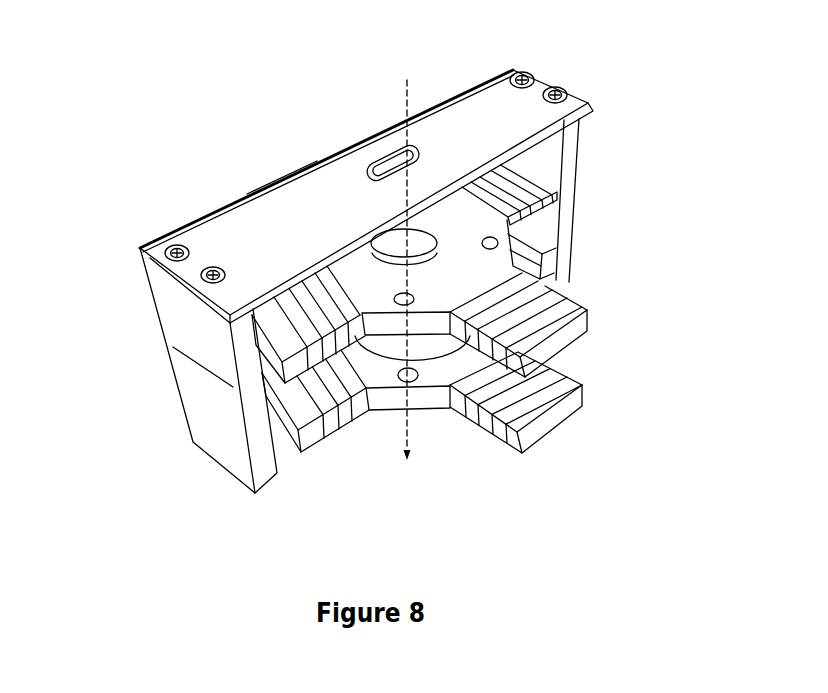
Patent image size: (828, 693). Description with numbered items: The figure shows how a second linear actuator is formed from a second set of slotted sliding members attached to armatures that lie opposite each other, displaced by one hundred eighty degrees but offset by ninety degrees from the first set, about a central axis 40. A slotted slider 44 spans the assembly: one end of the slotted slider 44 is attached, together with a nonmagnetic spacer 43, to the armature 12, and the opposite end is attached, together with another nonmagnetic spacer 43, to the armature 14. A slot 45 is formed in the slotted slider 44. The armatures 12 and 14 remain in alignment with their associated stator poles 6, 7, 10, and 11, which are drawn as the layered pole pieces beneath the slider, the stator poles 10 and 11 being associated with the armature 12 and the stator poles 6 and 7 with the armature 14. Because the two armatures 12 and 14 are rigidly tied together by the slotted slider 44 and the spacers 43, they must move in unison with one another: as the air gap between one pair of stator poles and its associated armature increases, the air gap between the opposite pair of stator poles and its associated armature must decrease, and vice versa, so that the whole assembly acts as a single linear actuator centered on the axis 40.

The axis of rotation 40 is at (416, 67).
The slot 45 is at (385, 160).
The slotted slider 44 is at (279, 217).
The nonmagnetic spacer 43 is at (186, 316).
The stator pole 6 is at (560, 195).
The armature 14 is at (573, 232).
The stator pole 7 is at (547, 266).
The stator pole 10 is at (261, 371).
The stator pole 11 is at (306, 458).
The armature 12 is at (234, 455).